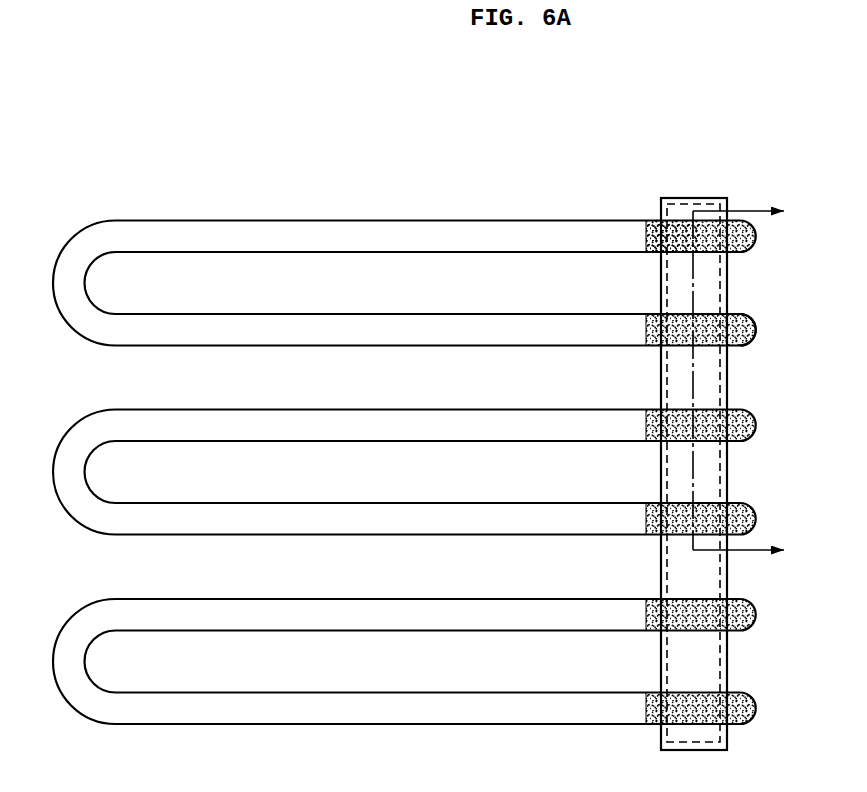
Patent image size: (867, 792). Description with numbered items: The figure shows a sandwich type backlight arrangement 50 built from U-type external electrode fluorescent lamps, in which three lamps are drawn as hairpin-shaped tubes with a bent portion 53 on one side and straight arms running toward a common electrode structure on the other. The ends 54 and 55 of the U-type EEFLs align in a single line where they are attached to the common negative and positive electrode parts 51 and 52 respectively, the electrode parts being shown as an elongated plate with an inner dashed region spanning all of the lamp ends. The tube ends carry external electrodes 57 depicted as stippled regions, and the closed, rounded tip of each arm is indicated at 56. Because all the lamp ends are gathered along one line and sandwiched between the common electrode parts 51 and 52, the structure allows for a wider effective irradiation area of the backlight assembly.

The heat exchanger 50 is at (53, 97).
The common negative electrode part 51 is at (693, 197).
The common positive electrode part 52 is at (710, 205).
The bent tube 53 is at (150, 219).
The end of U-type EEFL 54 is at (759, 321).
The end of U-type EEFL 55 is at (652, 217).
The sealed end 56 is at (754, 338).
The external electrode 57 is at (645, 229).